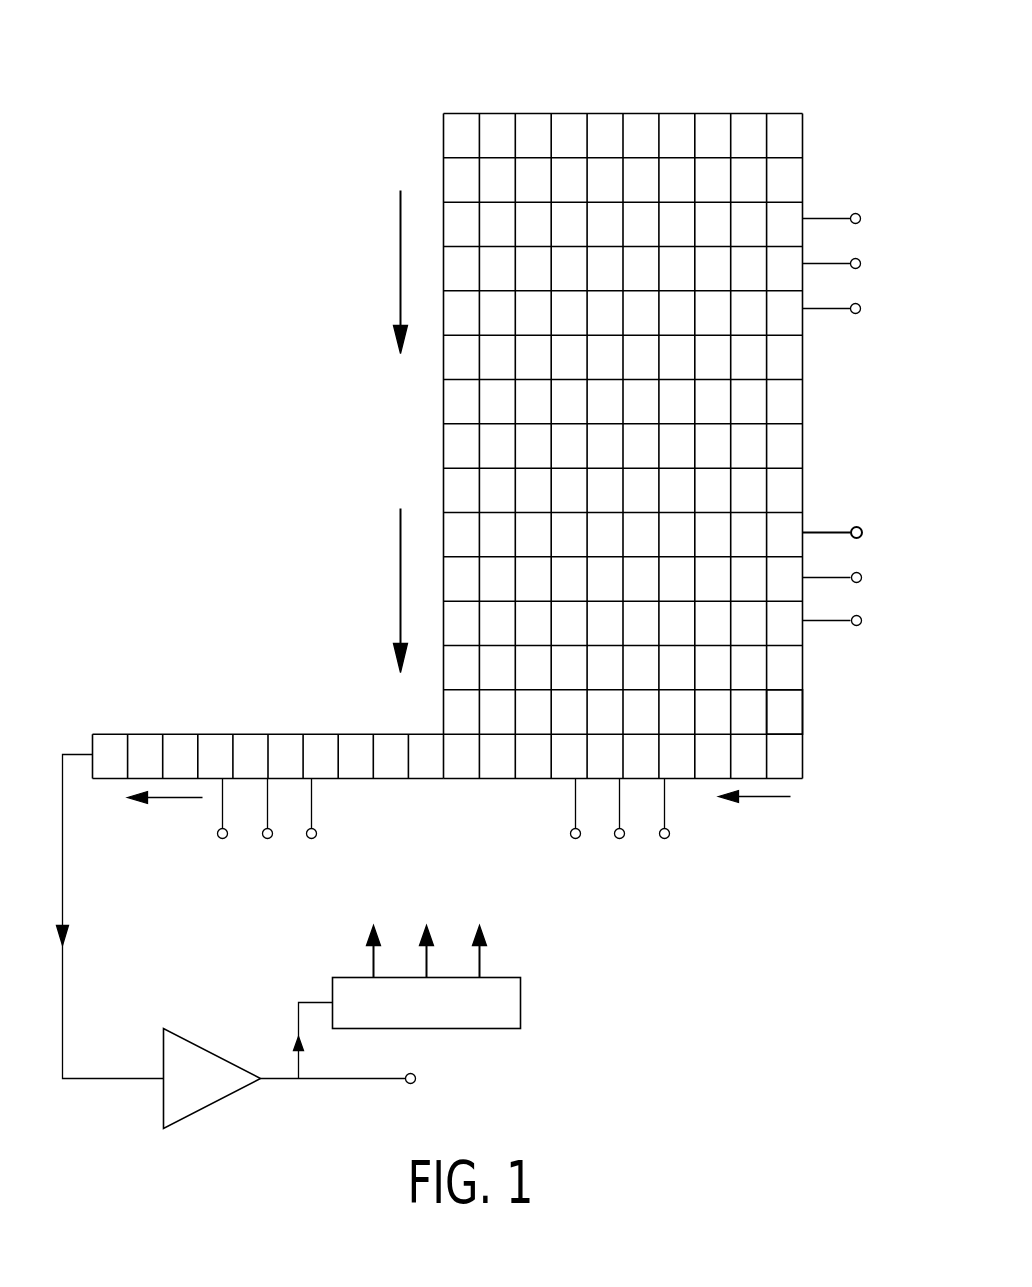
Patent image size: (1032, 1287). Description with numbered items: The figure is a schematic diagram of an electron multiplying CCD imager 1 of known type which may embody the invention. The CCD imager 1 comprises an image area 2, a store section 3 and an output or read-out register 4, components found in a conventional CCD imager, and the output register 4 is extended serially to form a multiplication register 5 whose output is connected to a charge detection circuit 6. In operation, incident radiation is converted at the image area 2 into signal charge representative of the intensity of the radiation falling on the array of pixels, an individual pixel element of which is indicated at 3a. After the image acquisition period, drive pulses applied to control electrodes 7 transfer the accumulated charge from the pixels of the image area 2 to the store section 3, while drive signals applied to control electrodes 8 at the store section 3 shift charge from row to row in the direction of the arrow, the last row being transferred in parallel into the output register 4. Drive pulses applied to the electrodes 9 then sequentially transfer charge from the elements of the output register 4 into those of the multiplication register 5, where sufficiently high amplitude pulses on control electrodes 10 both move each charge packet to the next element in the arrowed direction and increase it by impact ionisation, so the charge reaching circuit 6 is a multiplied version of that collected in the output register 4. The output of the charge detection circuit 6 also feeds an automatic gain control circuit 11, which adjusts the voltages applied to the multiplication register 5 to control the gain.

The CCD imager 1 is at (805, 84).
The image area 2 is at (360, 118).
The store section 3 is at (360, 430).
The pixel 3a is at (783, 715).
The output register 4 is at (805, 883).
The multiplication register 5 is at (442, 883).
The charge detection circuit 6 is at (210, 1050).
The control electrodes 7 is at (866, 210).
The control electrodes 8 is at (866, 522).
The electrodes 9 is at (673, 843).
The control electrodes 10 is at (320, 843).
The automatic gain control circuit 11 is at (520, 1002).